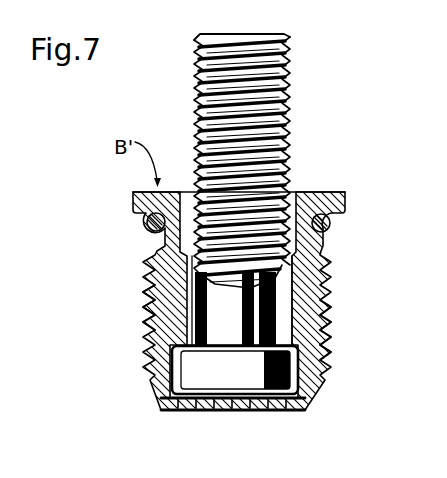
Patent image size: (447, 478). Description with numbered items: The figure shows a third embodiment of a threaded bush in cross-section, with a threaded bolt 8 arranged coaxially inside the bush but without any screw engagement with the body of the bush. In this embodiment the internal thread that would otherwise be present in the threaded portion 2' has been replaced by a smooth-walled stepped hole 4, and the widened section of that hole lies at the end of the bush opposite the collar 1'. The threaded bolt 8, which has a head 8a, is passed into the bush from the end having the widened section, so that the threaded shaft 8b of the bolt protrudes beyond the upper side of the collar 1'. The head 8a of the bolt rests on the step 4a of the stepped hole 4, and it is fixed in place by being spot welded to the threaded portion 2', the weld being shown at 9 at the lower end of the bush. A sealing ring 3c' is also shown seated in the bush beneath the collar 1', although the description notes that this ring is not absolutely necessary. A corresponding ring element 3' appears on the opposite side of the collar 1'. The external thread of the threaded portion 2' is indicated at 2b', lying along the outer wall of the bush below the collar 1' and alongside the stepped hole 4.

The threaded bolt 8 is at (265, 161).
The threaded shaft 8b is at (287, 152).
The head 8a is at (208, 380).
The collar 1' is at (223, 284).
The sealing ring 3' is at (134, 234).
The sealing ring 3c' is at (352, 234).
The threaded portion 2' is at (223, 300).
The external thread portion 2b' is at (355, 317).
The stepped hole 4 is at (150, 305).
The step 4a is at (328, 348).
The spot weld 9 is at (178, 410).